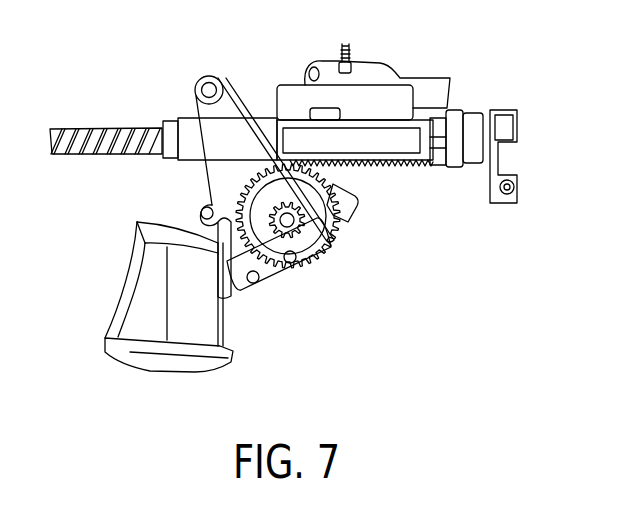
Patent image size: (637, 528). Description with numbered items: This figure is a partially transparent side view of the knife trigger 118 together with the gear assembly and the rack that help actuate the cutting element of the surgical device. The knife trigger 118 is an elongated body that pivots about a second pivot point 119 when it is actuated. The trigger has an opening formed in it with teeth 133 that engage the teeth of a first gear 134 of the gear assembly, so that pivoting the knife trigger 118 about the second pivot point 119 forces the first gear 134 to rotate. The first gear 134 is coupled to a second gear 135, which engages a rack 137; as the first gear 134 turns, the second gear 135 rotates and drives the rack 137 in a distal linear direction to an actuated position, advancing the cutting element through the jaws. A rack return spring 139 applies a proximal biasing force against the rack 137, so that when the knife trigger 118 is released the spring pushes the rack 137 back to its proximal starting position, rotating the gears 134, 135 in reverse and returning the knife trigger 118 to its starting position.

The knife trigger 118 is at (178, 334).
The second pivot point 119 is at (200, 77).
The teeth 133 is at (268, 264).
The first gear 134 is at (295, 270).
The second gear 135 is at (320, 202).
The rack 137 is at (402, 148).
The rack return spring 139 is at (113, 128).